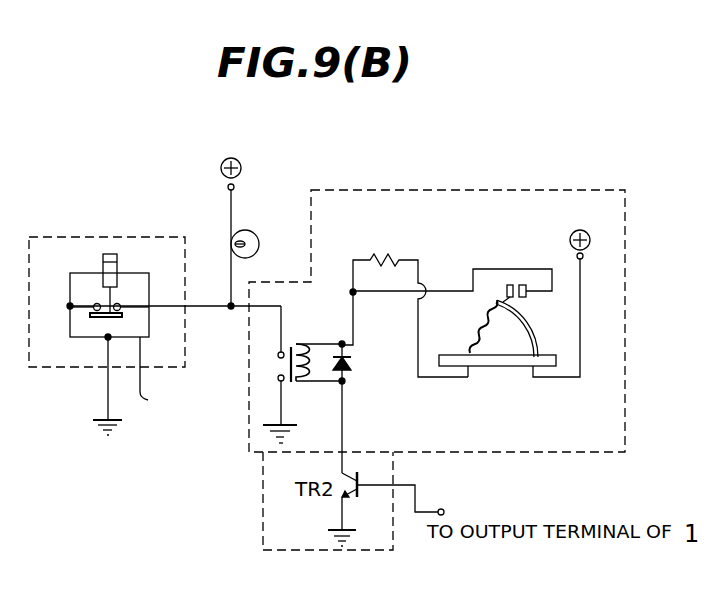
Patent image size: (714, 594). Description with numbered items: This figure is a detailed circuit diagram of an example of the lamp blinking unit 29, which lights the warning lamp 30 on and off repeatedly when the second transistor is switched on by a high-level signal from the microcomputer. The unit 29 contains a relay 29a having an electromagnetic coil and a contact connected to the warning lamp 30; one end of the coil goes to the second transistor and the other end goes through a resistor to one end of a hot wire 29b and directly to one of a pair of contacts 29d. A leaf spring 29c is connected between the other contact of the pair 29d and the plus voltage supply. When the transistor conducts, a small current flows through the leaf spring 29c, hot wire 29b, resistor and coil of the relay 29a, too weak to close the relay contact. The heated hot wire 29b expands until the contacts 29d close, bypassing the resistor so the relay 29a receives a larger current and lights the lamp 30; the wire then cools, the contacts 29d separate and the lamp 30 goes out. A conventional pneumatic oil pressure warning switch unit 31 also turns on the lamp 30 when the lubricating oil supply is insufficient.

The lamp blinking unit 29 is at (467, 190).
The relay 29a is at (323, 322).
The hot wire 29b is at (480, 331).
The leaf spring 29c is at (542, 316).
The pair of contacts 29d is at (519, 279).
The warning lamp 30 is at (258, 232).
The pneumatic oil pressure warning switch unit 31 is at (132, 237).